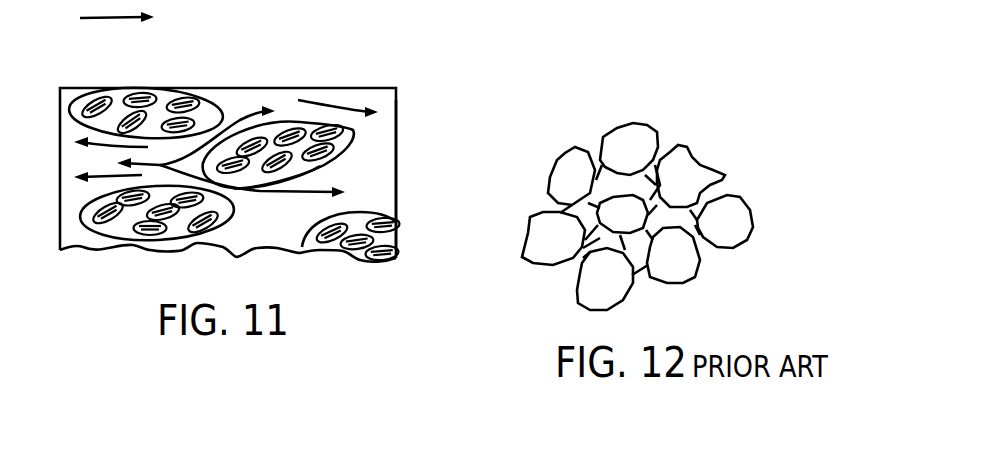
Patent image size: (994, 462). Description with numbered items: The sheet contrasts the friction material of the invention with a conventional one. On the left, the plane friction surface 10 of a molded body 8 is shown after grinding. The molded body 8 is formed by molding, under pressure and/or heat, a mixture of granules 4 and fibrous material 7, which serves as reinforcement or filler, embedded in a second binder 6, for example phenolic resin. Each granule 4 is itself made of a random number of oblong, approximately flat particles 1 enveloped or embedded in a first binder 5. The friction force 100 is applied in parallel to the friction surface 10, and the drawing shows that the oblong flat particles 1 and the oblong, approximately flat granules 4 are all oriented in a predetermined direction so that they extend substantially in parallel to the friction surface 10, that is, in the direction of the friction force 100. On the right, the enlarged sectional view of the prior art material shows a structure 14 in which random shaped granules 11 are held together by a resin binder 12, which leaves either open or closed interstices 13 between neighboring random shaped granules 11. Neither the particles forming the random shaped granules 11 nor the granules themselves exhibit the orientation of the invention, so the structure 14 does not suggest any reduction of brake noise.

In FIG. 11, the particles 1 is at (97, 103).
In FIG. 11, the granule 4 is at (85, 112).
In FIG. 11, the first binder 5 is at (320, 165).
In FIG. 11, the second binder 6 is at (380, 203).
In FIG. 11, the fibrous material 7 is at (250, 196).
In FIG. 11, the molded body 8 is at (398, 139).
In FIG. 11, the friction surface 10 is at (211, 78).
In FIG. 11, the friction force 100 is at (95, 16).
In FIG. 12, the random shaped granules 11 is at (617, 140).
In FIG. 12, the resin binder 12 is at (660, 150).
In FIG. 12, the interstices 13 is at (693, 223).
In FIG. 12, the structure 14 is at (716, 138).